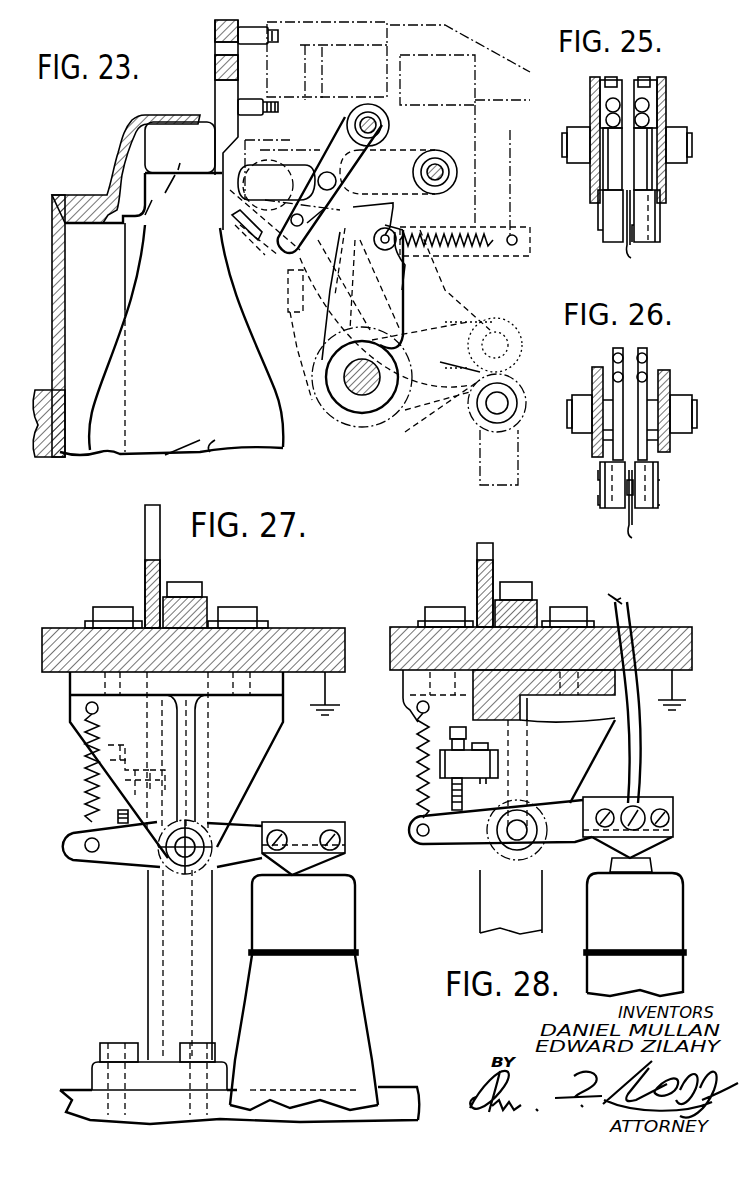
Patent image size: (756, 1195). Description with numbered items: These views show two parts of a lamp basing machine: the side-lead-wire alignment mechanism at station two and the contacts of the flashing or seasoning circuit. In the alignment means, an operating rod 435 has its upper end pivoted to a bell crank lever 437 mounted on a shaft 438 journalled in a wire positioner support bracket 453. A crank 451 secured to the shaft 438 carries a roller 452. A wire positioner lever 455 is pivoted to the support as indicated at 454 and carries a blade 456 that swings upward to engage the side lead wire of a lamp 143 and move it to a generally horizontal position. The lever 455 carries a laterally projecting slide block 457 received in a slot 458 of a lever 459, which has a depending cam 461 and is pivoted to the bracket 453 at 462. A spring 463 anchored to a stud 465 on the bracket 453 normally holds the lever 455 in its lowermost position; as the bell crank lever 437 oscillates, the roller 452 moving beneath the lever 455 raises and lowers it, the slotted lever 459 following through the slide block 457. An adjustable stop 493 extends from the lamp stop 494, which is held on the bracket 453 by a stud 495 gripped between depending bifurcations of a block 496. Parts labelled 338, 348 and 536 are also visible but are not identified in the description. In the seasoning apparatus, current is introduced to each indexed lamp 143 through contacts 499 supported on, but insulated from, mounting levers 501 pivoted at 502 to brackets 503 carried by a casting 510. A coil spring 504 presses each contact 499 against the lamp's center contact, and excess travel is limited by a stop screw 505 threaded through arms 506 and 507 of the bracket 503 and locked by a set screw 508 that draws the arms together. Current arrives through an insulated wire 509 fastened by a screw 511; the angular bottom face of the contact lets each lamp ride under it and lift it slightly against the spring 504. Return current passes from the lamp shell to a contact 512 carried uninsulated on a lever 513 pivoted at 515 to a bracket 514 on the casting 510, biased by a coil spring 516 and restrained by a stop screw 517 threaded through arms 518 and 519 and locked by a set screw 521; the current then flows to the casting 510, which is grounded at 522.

In FIG. 23, the lamp 143 is at (222, 445).
In FIG. 27, the lamp 143 is at (355, 1035).
In FIG. 28, the lamp 143 is at (587, 967).
In FIG. 23, the housing body 338 is at (65, 335).
In FIG. 23, the housing cap 348 is at (118, 135).
In FIG. 23, the housing wall 536 is at (118, 155).
In FIG. 23, the operating rod 435 is at (485, 475).
In FIG. 23, the bell crank lever 437 is at (420, 425).
In FIG. 23, the shaft 438 is at (355, 395).
In FIG. 23, the crank 451 is at (398, 297).
In FIG. 23, the roller 452 is at (382, 294).
In FIG. 23, the wire positioner support bracket 453 is at (297, 348).
In FIG. 23, the pivot 454 is at (368, 112).
In FIG. 23, the wire positioner lever 455 is at (270, 247).
In FIG. 23, the blade 456 is at (216, 240).
In FIG. 23, the slide block 457 is at (330, 177).
In FIG. 23, the slot 458 is at (291, 167).
In FIG. 23, the lever 459 is at (235, 195).
In FIG. 23, the depending cam 461 is at (294, 291).
In FIG. 23, the pivot 462 is at (437, 168).
In FIG. 23, the spring 463 is at (455, 268).
In FIG. 23, the stud 465 is at (512, 248).
In FIG. 23, the adjustable stop 493 is at (243, 100).
In FIG. 23, the lamp stop 494 is at (220, 100).
In FIG. 23, the stud 495 is at (223, 43).
In FIG. 23, the block 496 is at (398, 127).
In FIG. 25, the contact 499 is at (646, 245).
In FIG. 26, the contact 499 is at (648, 510).
In FIG. 28, the contact 499 is at (650, 850).
In FIG. 25, the mounting lever 501 is at (655, 180).
In FIG. 26, the mounting lever 501 is at (660, 490).
In FIG. 28, the mounting lever 501 is at (553, 846).
In FIG. 26, the pivot 502 is at (670, 395).
In FIG. 28, the pivot 502 is at (512, 838).
In FIG. 25, the bracket 503 is at (665, 98).
In FIG. 26, the bracket 503 is at (658, 450).
In FIG. 28, the bracket 503 is at (592, 743).
In FIG. 28, the coil spring 504 is at (416, 786).
In FIG. 26, the stop screw 505 is at (647, 370).
In FIG. 28, the stop screw 505 is at (420, 730).
In FIG. 28, the arm 506 is at (445, 757).
In FIG. 28, the arm 507 is at (440, 770).
In FIG. 28, the set screw 508 is at (466, 736).
In FIG. 25, the insulated wire 509 is at (630, 258).
In FIG. 26, the insulated wire 509 is at (632, 533).
In FIG. 28, the insulated wire 509 is at (618, 598).
In FIG. 27, the casting 510 is at (296, 630).
In FIG. 28, the casting 510 is at (670, 632).
In FIG. 28, the screw 511 is at (640, 806).
In FIG. 25, the contact 512 is at (616, 245).
In FIG. 26, the contact 512 is at (617, 512).
In FIG. 27, the contact 512 is at (345, 860).
In FIG. 25, the lever 513 is at (598, 210).
In FIG. 27, the lever 513 is at (226, 862).
In FIG. 25, the bracket 514 is at (592, 103).
In FIG. 26, the bracket 514 is at (594, 450).
In FIG. 27, the bracket 514 is at (248, 790).
In FIG. 26, the pivot 515 is at (578, 388).
In FIG. 27, the pivot 515 is at (180, 850).
In FIG. 27, the coil spring 516 is at (88, 800).
In FIG. 26, the stop screw 517 is at (613, 365).
In FIG. 27, the stop screw 517 is at (92, 830).
In FIG. 27, the arm 518 is at (90, 756).
In FIG. 27, the arm 519 is at (90, 778).
In FIG. 27, the set screw 521 is at (200, 742).
In FIG. 27, the ground 522 is at (278, 740).